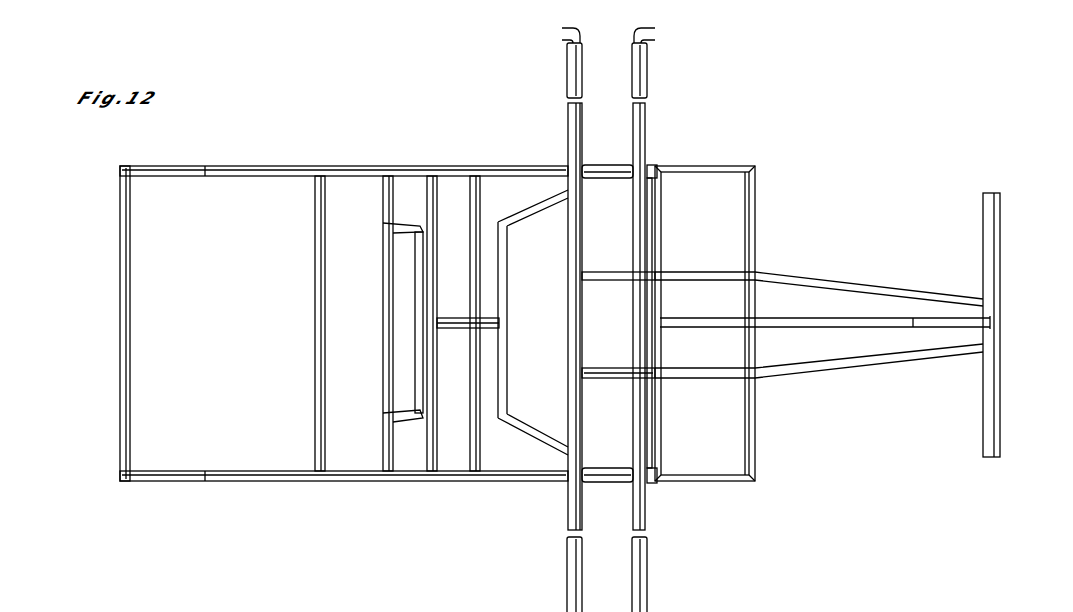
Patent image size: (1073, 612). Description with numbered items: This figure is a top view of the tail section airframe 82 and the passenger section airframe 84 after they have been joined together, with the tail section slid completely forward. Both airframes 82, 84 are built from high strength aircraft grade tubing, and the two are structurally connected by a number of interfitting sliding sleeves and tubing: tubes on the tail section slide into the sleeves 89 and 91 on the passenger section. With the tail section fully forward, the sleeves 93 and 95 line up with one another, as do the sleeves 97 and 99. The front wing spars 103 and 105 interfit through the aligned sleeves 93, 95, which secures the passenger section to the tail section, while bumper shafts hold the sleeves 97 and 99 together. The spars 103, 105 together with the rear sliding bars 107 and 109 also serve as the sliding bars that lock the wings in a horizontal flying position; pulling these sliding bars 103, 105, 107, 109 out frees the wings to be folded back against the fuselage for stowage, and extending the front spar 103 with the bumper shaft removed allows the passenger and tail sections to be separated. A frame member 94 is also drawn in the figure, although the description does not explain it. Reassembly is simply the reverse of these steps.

The tail section airframe 82 is at (873, 268).
The passenger section airframe 84 is at (226, 493).
The sleeve 89 is at (607, 164).
The sleeve 91 is at (603, 482).
The sleeve 93 is at (568, 283).
The frame member 94 is at (373, 609).
The sleeve 95 is at (572, 223).
The sleeve 97 is at (660, 303).
The sleeve 99 is at (663, 235).
The front wing spar 103 is at (568, 123).
The front wing spar 105 is at (556, 611).
The rear shaft 107 is at (647, 110).
The sliding bar 109 is at (640, 548).